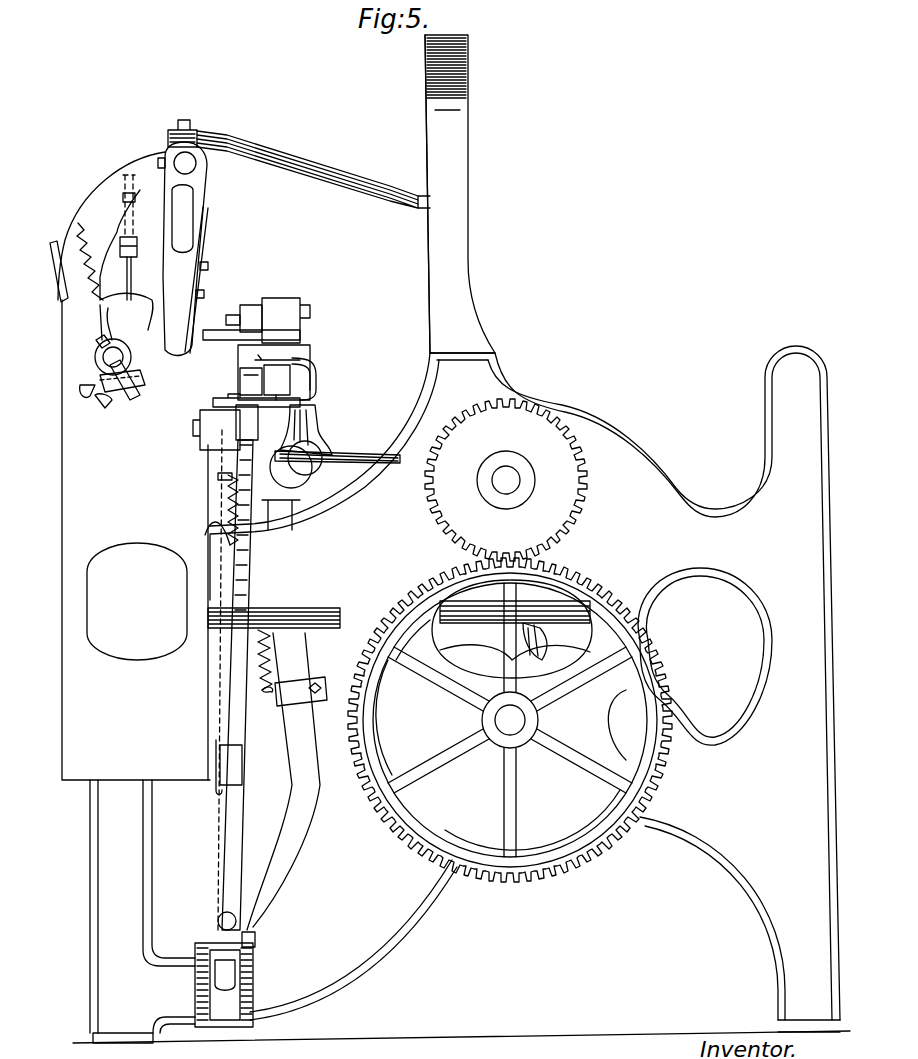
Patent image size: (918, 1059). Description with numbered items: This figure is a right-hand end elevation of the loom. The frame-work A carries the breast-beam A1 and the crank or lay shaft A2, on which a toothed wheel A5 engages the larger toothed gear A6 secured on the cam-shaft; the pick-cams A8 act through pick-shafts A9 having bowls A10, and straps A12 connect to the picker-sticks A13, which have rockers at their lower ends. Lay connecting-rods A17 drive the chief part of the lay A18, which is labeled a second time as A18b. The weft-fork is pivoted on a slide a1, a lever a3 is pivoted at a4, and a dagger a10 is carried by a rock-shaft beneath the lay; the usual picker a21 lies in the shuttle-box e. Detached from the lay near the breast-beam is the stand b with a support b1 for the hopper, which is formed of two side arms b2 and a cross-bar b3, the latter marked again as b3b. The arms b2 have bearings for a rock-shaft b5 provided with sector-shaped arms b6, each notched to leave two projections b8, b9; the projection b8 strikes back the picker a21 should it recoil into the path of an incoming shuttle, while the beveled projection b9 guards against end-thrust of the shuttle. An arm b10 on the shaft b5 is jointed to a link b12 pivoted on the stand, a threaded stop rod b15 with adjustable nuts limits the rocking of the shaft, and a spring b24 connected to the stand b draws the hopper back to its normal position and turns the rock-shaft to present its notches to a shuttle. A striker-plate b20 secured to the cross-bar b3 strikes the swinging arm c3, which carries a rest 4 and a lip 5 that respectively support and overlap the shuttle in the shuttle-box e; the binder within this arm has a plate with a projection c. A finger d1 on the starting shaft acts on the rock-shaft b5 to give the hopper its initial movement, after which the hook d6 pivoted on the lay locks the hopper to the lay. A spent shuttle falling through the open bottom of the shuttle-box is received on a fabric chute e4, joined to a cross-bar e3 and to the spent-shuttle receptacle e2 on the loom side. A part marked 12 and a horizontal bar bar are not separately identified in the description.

The frame-work A is at (675, 464).
The breast-beam A1 is at (525, 722).
The crank or lay shaft A2 is at (505, 480).
The toothed wheel A5 is at (512, 430).
The toothed gear A6 is at (420, 596).
The pick-cams A8 is at (470, 656).
The pick-shafts A9 is at (470, 641).
The bowls A10 is at (548, 636).
The straps A12 is at (238, 760).
The picker-sticks A13 is at (226, 812).
The lay connecting-rods A17 is at (377, 468).
The lay A18 is at (210, 433).
The upper bearing bracket A18b is at (296, 304).
The slide a1 is at (277, 380).
The lever a3 is at (300, 480).
The pivot a4 is at (310, 425).
The dagger a10 is at (218, 476).
The picker a21 is at (232, 392).
The stand b is at (112, 172).
The support b1 is at (195, 165).
The arms or side pieces b2 is at (180, 198).
The cross-bar b3 is at (205, 272).
The pin b3b is at (81, 383).
The rock-shaft b5 is at (103, 357).
The arms b6 is at (96, 340).
The projection b8 is at (110, 250).
The projection b9 is at (145, 305).
The arm b10 is at (132, 380).
The link b12 is at (105, 410).
The rod b15 is at (134, 226).
The striker-plate b20 is at (203, 245).
The spring b24 is at (100, 318).
The projection c is at (300, 350).
The swinging arm c3 is at (312, 388).
The finger d1 is at (116, 381).
The locking device or hook d6 is at (251, 322).
The shuttle-box e is at (240, 380).
The spent-shuttle receptacle e2 is at (118, 545).
The cross-bar e3 is at (225, 465).
The chute or apron e4 is at (208, 518).
The rest 4 is at (273, 405).
The lip 5 is at (272, 352).
The blade 12 is at (58, 262).
The cross bar is at (274, 769).